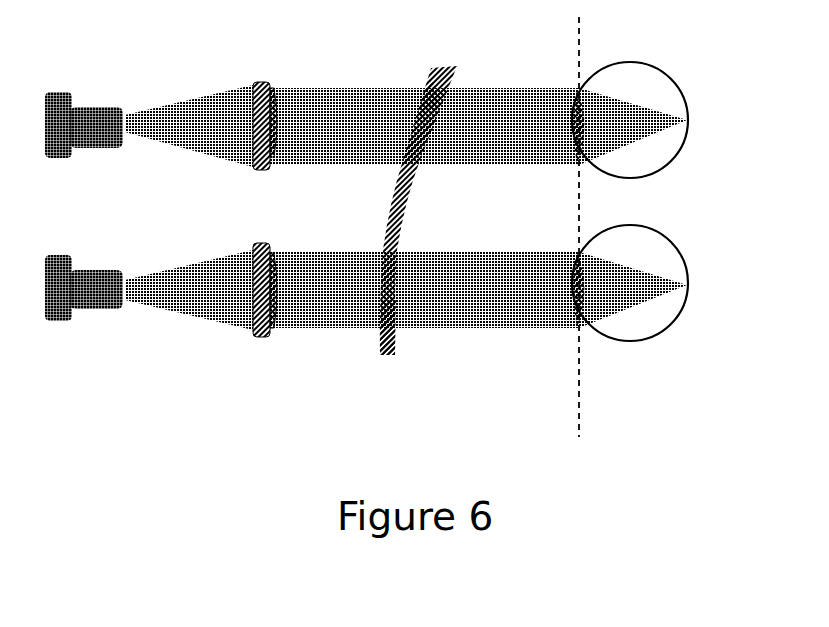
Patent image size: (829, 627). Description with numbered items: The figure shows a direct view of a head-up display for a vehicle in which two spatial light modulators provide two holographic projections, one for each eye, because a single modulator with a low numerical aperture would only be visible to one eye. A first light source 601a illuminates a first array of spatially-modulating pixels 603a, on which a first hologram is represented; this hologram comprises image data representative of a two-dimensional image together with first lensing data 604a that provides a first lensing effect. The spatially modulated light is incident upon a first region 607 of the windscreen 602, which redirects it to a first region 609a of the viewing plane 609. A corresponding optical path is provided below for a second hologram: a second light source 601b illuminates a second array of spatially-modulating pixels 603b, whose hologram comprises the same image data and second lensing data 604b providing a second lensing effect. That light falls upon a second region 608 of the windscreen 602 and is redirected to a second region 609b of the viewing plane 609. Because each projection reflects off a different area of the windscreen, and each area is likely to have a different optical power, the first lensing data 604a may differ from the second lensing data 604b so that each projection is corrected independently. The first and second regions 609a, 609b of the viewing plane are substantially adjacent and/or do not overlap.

The first light source 601a is at (84, 133).
The second light source 601b is at (84, 296).
The first array of spatially-modulating pixels 603a is at (258, 110).
The second array of spatially-modulating pixels 603b is at (255, 293).
The first lensing data 604a is at (273, 112).
The second lensing data 604b is at (275, 293).
The windscreen 602 is at (448, 72).
The first region of the windscreen 607 is at (413, 120).
The second region of the windscreen 608 is at (387, 293).
The viewing plane 609 is at (600, 227).
The first region of the viewing plane 609a is at (659, 120).
The second region of the viewing plane 609b is at (659, 283).